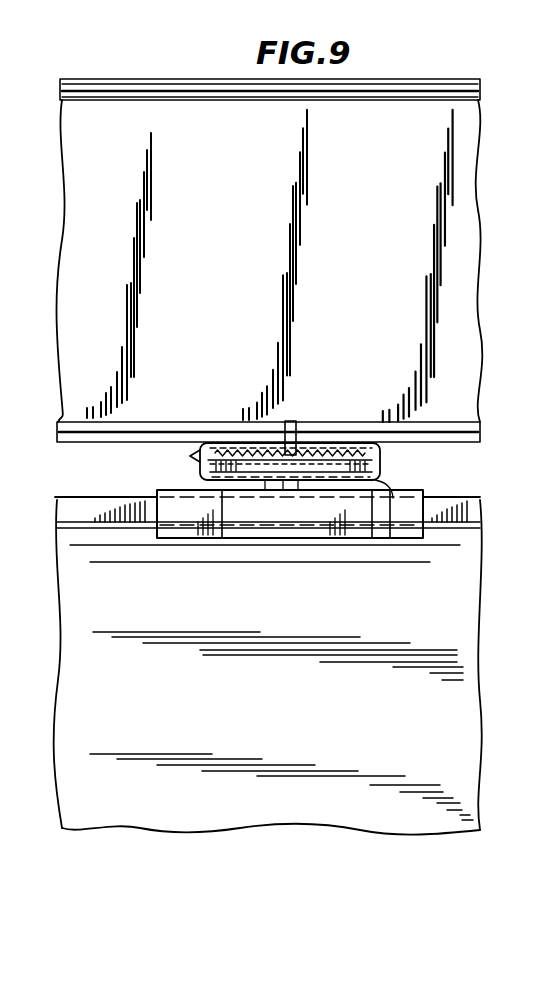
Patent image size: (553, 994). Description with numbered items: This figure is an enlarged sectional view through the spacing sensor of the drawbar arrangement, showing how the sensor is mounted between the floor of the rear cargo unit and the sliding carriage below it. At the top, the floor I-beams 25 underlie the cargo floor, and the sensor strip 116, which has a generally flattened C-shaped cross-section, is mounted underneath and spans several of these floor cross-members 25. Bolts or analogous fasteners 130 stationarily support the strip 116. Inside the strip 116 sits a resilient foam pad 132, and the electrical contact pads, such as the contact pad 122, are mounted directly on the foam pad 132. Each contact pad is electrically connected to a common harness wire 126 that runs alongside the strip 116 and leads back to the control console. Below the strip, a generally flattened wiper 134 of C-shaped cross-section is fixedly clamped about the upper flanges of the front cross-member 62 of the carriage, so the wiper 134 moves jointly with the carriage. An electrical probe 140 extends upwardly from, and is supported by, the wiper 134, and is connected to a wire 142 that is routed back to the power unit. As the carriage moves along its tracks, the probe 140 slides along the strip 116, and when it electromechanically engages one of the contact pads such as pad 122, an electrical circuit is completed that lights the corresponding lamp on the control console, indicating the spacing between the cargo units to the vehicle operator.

The floor I-beam 25 is at (462, 253).
The front cross-member 62 is at (487, 683).
The sensor strip 116 is at (392, 500).
The contact pad 122 is at (385, 458).
The harness wire 126 is at (189, 457).
The fastener 130 is at (291, 421).
The resilient foam pad 132 is at (343, 450).
The wiper 134 is at (425, 497).
The electrical probe 140 is at (262, 478).
The wire 142 is at (290, 456).